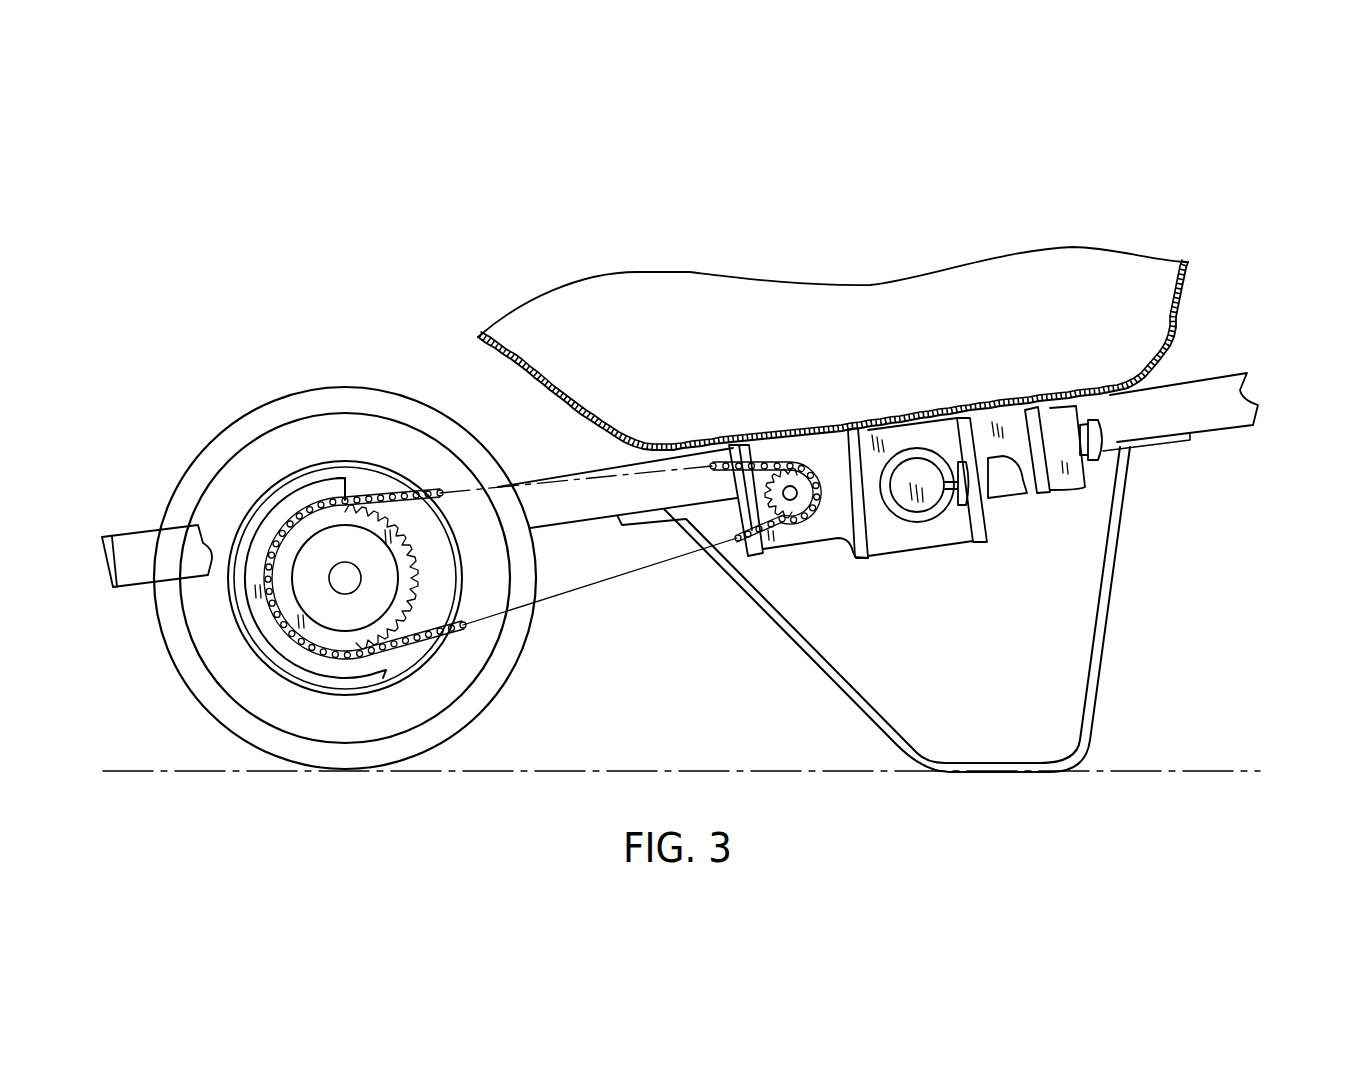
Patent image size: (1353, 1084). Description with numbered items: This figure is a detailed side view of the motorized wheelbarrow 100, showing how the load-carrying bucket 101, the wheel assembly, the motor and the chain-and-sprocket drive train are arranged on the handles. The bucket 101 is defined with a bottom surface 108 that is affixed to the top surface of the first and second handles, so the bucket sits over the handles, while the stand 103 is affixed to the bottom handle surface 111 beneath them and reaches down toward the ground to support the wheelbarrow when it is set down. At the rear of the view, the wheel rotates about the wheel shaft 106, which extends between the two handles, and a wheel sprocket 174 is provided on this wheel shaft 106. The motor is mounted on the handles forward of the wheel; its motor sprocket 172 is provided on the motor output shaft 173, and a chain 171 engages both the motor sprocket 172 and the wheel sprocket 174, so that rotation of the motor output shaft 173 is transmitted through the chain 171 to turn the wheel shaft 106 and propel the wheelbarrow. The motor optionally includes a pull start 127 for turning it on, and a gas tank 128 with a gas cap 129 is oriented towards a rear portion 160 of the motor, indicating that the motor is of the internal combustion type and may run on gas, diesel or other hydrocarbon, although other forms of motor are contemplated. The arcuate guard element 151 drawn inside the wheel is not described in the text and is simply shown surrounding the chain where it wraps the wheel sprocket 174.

The motorized wheelbarrow 100 is at (975, 150).
The bucket 101 is at (1188, 290).
The stand 103 is at (1097, 710).
The wheel shaft 106 is at (345, 580).
The bottom surface 108 is at (1113, 395).
The bottom handle surface 111 is at (1237, 405).
The pull start 127 is at (965, 483).
The gas tank 128 is at (1067, 475).
The gas cap 129 is at (1103, 448).
The chain guard 151 is at (315, 492).
The rear portion 160 is at (1013, 488).
The chain 171 is at (790, 497).
The motor sprocket 172 is at (733, 498).
The motor output shaft 173 is at (808, 545).
The wheel sprocket 174 is at (418, 578).